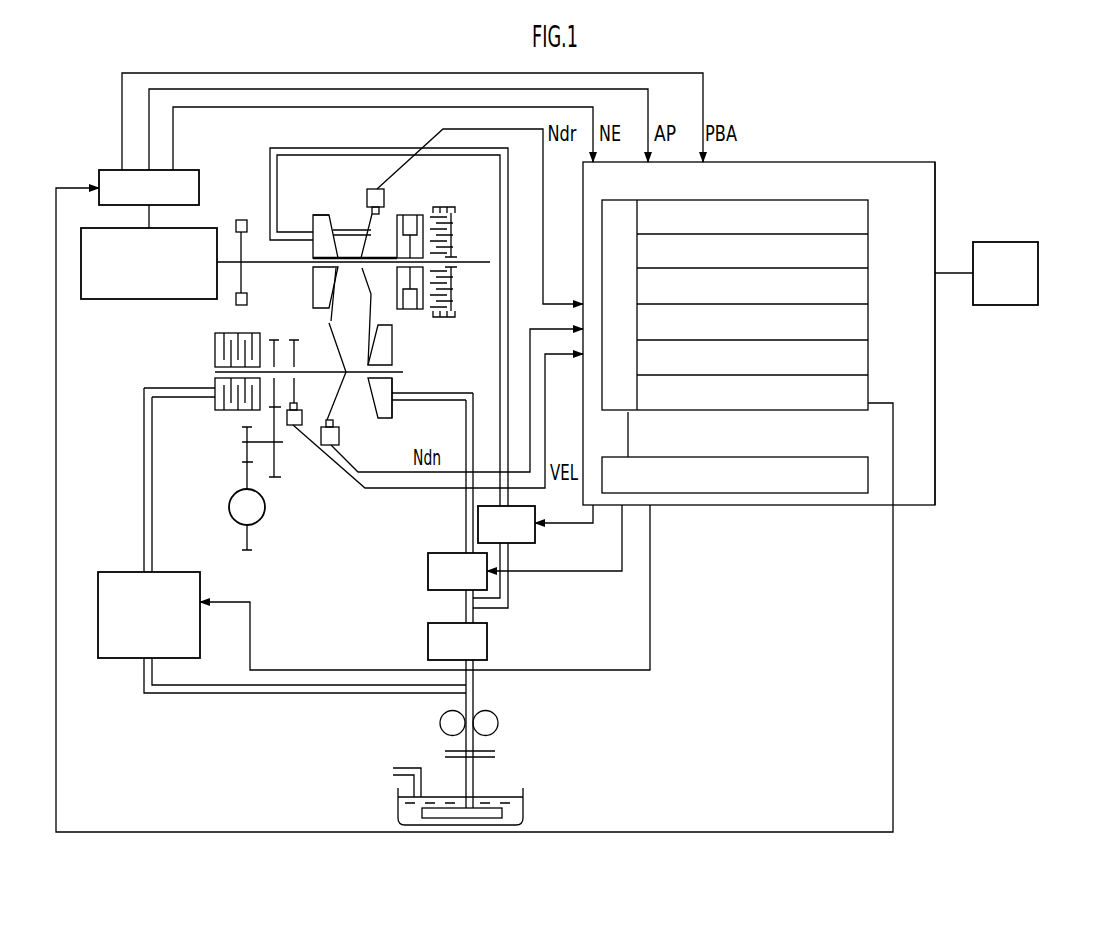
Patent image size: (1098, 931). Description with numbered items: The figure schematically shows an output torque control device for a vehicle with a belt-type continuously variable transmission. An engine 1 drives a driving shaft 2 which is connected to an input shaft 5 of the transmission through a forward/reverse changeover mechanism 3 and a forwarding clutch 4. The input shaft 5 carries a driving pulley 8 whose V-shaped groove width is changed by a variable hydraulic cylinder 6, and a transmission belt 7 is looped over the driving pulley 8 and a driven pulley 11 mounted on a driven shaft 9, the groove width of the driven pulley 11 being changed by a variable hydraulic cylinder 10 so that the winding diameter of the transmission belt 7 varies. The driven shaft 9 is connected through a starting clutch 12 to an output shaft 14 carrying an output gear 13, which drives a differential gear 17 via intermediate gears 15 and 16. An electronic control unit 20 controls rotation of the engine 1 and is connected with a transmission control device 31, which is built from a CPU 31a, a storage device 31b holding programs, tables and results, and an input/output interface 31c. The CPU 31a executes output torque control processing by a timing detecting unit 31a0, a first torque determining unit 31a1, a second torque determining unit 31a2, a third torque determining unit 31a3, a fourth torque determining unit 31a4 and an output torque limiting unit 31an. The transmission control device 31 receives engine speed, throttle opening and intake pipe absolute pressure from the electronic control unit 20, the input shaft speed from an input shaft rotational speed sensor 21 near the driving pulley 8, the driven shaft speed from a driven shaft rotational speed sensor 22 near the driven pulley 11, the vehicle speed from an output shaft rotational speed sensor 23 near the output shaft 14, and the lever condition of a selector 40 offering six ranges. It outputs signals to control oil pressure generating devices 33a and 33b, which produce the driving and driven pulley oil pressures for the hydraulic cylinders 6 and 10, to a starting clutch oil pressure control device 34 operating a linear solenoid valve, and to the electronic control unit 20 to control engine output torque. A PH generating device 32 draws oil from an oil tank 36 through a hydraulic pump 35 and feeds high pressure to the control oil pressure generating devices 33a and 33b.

The engine 1 is at (211, 228).
The driving shaft 2 is at (249, 259).
The forward/reverse changeover mechanism 3 is at (455, 237).
The forwarding clutch 4 is at (420, 214).
The input shaft 5 is at (373, 270).
The variable hydraulic cylinder 6 is at (313, 215).
The transmission belt 7 is at (348, 230).
The driving pulley 8 is at (338, 200).
The driven shaft 9 is at (403, 372).
The variable hydraulic cylinder 10 is at (386, 348).
The driven pulley 11 is at (400, 414).
The starting clutch 12 is at (215, 350).
The output gear 13 is at (294, 340).
The output shaft 14 is at (274, 340).
The intermediate gear 15 is at (276, 480).
The intermediate gear 16 is at (245, 436).
The differential gear 17 is at (229, 507).
The electronic control unit 20 is at (183, 170).
The input shaft rotational speed sensor 21 is at (385, 197).
The driven shaft rotational speed sensor 22 is at (340, 441).
The output shaft rotational speed sensor 23 is at (291, 428).
The transmission control device 31 is at (935, 191).
The CPU 31a is at (614, 200).
The timing detecting unit 31a0 is at (870, 212).
The first torque determining unit 31a1 is at (870, 247).
The second torque determining unit 31a2 is at (870, 282).
The third torque determining unit 31a3 is at (870, 317).
The fourth torque determining unit 31a4 is at (870, 352).
The output torque limiting unit 31an is at (870, 388).
The storage device 31b is at (826, 457).
The input/output interface 31c is at (935, 468).
The PH generating device 32 is at (487, 643).
The control oil pressure generating device 33a is at (535, 514).
The control oil pressure generating device 33b is at (428, 560).
The starting clutch oil pressure control device 34 is at (109, 572).
The hydraulic pump 35 is at (497, 714).
The oil tank 36 is at (523, 800).
The selector 40 is at (1040, 262).